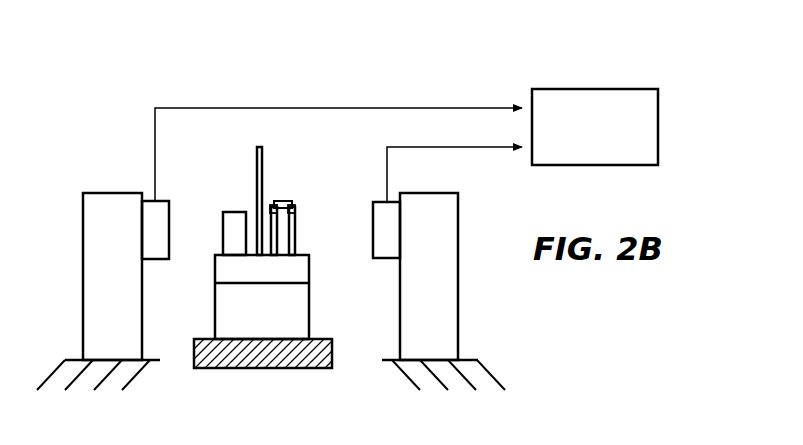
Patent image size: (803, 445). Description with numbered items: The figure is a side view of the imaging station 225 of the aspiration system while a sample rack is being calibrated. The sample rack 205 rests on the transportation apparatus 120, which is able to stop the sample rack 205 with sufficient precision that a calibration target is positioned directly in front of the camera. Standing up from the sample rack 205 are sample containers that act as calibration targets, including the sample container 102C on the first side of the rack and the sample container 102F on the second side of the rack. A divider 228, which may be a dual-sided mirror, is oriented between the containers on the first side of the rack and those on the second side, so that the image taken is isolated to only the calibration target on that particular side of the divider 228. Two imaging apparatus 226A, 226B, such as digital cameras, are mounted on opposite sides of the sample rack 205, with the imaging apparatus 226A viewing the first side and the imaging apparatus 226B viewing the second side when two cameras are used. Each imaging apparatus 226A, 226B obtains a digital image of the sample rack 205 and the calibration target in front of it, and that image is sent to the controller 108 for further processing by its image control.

The imaging station 225 is at (196, 78).
The imaging apparatus 226A is at (155, 259).
The imaging apparatus 226B is at (390, 258).
The controller 108 is at (598, 89).
The sample rack 205 is at (309, 327).
The transportation apparatus 120 is at (251, 378).
The sample container 102C is at (233, 212).
The divider 228 is at (263, 173).
The sample container 102F is at (290, 202).